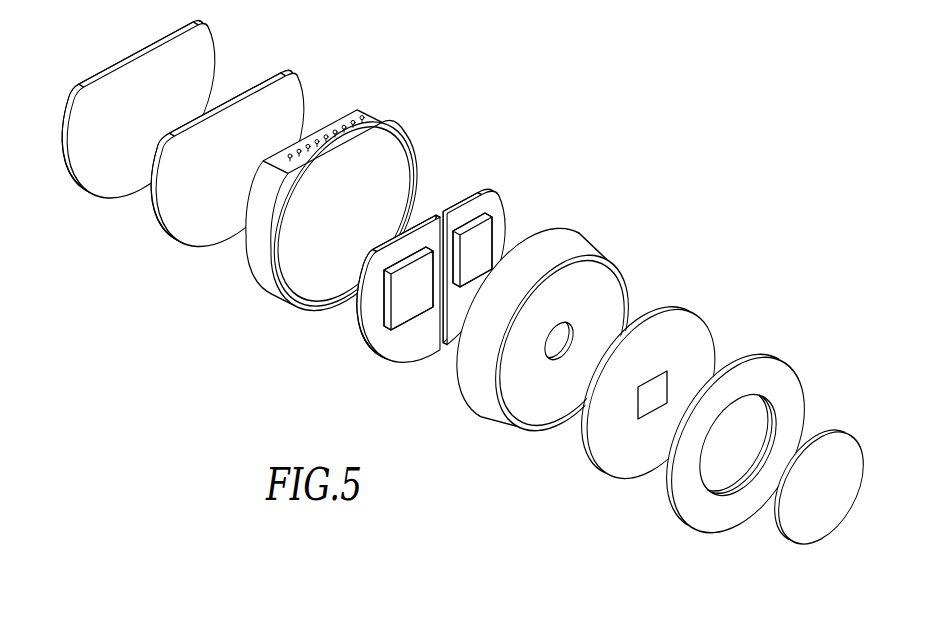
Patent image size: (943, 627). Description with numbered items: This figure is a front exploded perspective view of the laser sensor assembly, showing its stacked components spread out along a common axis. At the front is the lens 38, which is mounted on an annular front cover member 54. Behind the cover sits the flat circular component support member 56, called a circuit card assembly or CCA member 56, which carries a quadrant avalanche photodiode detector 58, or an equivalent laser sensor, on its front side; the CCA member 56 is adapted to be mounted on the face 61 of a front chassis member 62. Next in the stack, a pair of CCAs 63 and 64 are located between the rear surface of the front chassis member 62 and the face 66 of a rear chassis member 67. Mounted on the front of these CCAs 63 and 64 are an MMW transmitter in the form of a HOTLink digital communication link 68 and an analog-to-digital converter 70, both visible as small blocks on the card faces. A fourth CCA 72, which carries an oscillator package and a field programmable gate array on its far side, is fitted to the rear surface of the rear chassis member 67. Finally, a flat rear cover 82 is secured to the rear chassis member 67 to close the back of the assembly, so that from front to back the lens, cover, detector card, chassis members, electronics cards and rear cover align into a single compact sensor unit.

The lens 38 is at (793, 544).
The annular front cover member 54 is at (702, 527).
The circuit card assembly (CCA) member 56 is at (605, 474).
The quadrant avalanche photodiode detector (QAPD) 58 is at (664, 385).
The face 61 is at (612, 292).
The front chassis member 62 is at (485, 424).
The CCA 63 is at (399, 363).
The CCA 64 is at (480, 186).
The face 66 is at (268, 303).
The rear chassis member 67 is at (414, 151).
The HOTLink digital communication link 68 is at (388, 319).
The analog-to-digital (A/D) converter 70 is at (490, 228).
The fourth CCA 72 is at (187, 246).
The flat rear cover 82 is at (105, 201).